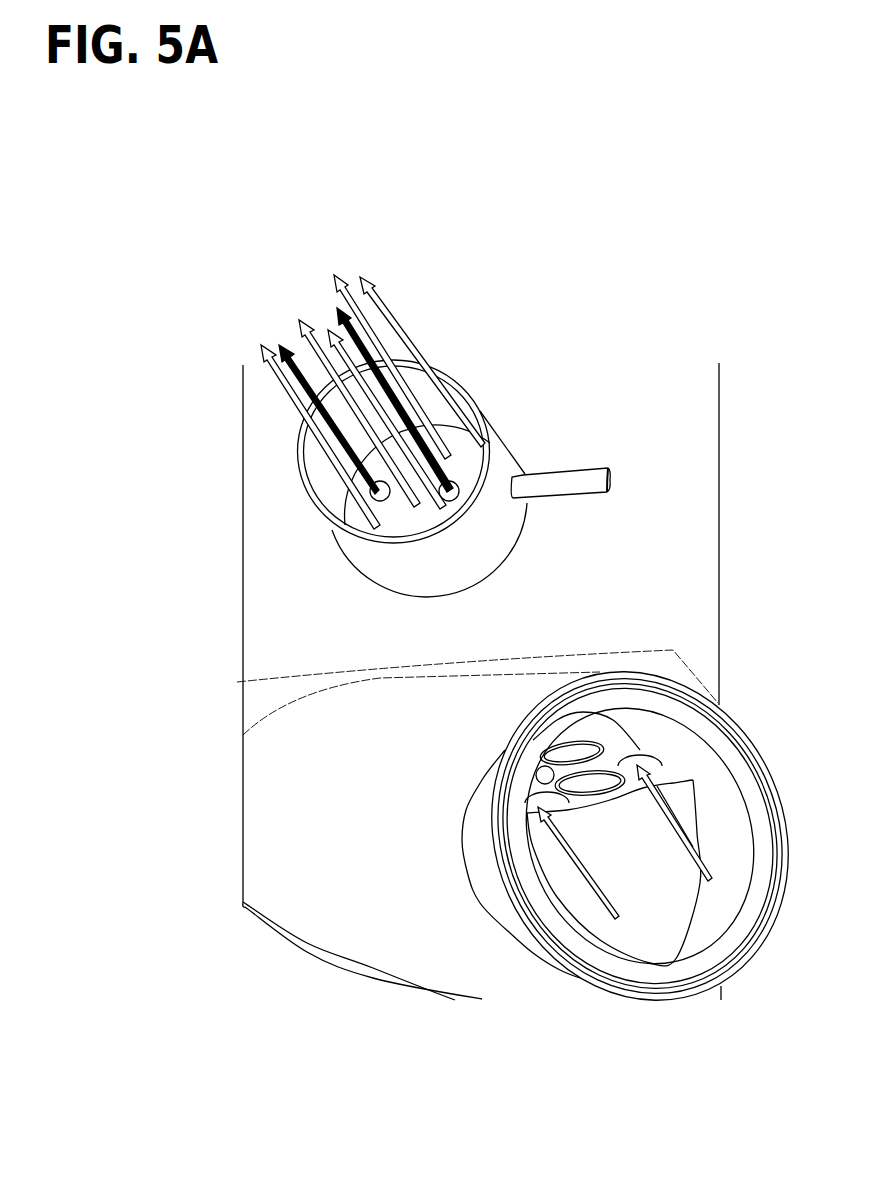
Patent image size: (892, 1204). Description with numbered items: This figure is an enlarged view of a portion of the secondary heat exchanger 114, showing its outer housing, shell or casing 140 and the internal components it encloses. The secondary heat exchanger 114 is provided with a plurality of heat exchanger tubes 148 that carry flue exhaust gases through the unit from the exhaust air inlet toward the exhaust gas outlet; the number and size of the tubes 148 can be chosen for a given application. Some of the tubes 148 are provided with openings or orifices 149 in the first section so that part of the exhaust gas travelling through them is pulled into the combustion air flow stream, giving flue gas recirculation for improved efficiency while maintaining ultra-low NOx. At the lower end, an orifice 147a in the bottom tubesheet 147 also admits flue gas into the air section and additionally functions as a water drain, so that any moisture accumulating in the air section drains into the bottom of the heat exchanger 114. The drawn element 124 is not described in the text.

The secondary heat exchanger 114 is at (214, 243).
The outer housing 140 is at (258, 407).
The cup / inlet chamber 124 is at (370, 562).
The heat exchanger tubes 148 is at (370, 490).
The orifices 149 is at (347, 502).
The bottom tubesheet 147 is at (633, 788).
The orifice 147a is at (607, 753).